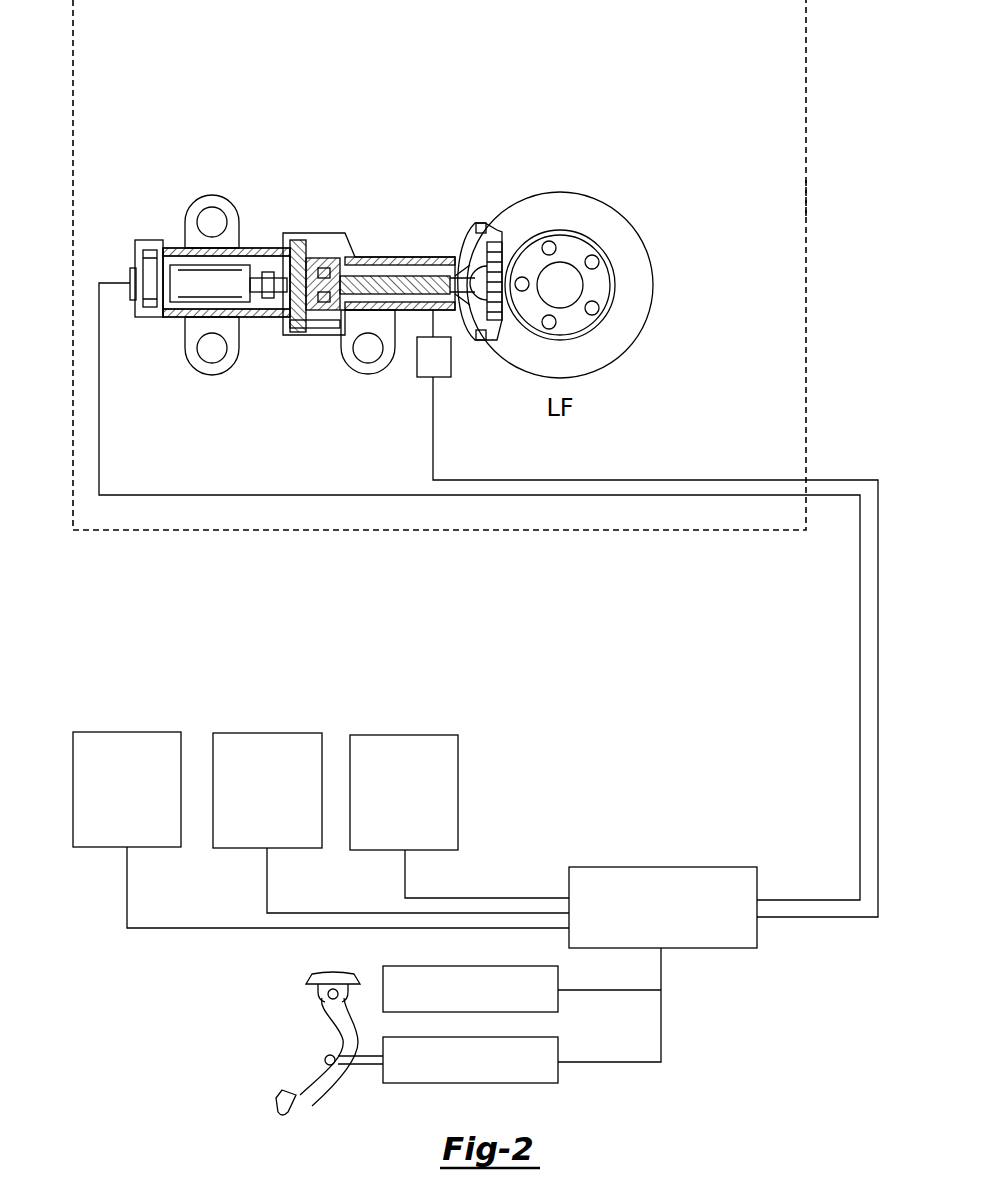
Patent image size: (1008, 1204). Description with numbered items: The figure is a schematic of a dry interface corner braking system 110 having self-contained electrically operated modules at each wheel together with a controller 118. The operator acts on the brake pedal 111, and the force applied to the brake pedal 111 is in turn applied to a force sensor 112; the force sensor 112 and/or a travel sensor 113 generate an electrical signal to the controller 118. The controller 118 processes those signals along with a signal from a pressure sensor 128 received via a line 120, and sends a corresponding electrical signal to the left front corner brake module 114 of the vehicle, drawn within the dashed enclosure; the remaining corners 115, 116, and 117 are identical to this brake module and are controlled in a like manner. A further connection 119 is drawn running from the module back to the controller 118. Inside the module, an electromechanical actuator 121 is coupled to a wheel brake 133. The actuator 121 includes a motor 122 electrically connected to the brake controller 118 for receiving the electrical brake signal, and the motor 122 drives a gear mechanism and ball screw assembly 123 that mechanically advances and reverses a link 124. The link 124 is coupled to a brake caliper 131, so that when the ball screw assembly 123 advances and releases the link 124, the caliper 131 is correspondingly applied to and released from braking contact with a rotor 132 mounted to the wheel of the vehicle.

The braking system 110 is at (818, 58).
The brake pedal 111 is at (308, 1068).
The force sensor 112 is at (558, 1075).
The travel sensor 113 is at (558, 998).
The left front corner brake module 114 is at (800, 208).
The corner 115 is at (157, 732).
The corner 116 is at (297, 733).
The corner 117 is at (435, 735).
The controller 118 is at (702, 867).
The hydraulic line 119 is at (170, 495).
The line 120 is at (535, 482).
The electromechanical actuator 121 is at (272, 222).
The motor 122 is at (181, 333).
The gear mechanism and ball screw assembly 123 is at (365, 256).
The link 124 is at (432, 264).
The pressure sensor 128 is at (417, 372).
The brake caliper 131 is at (462, 340).
The rotor 132 is at (636, 244).
The wheel brake 133 is at (590, 196).